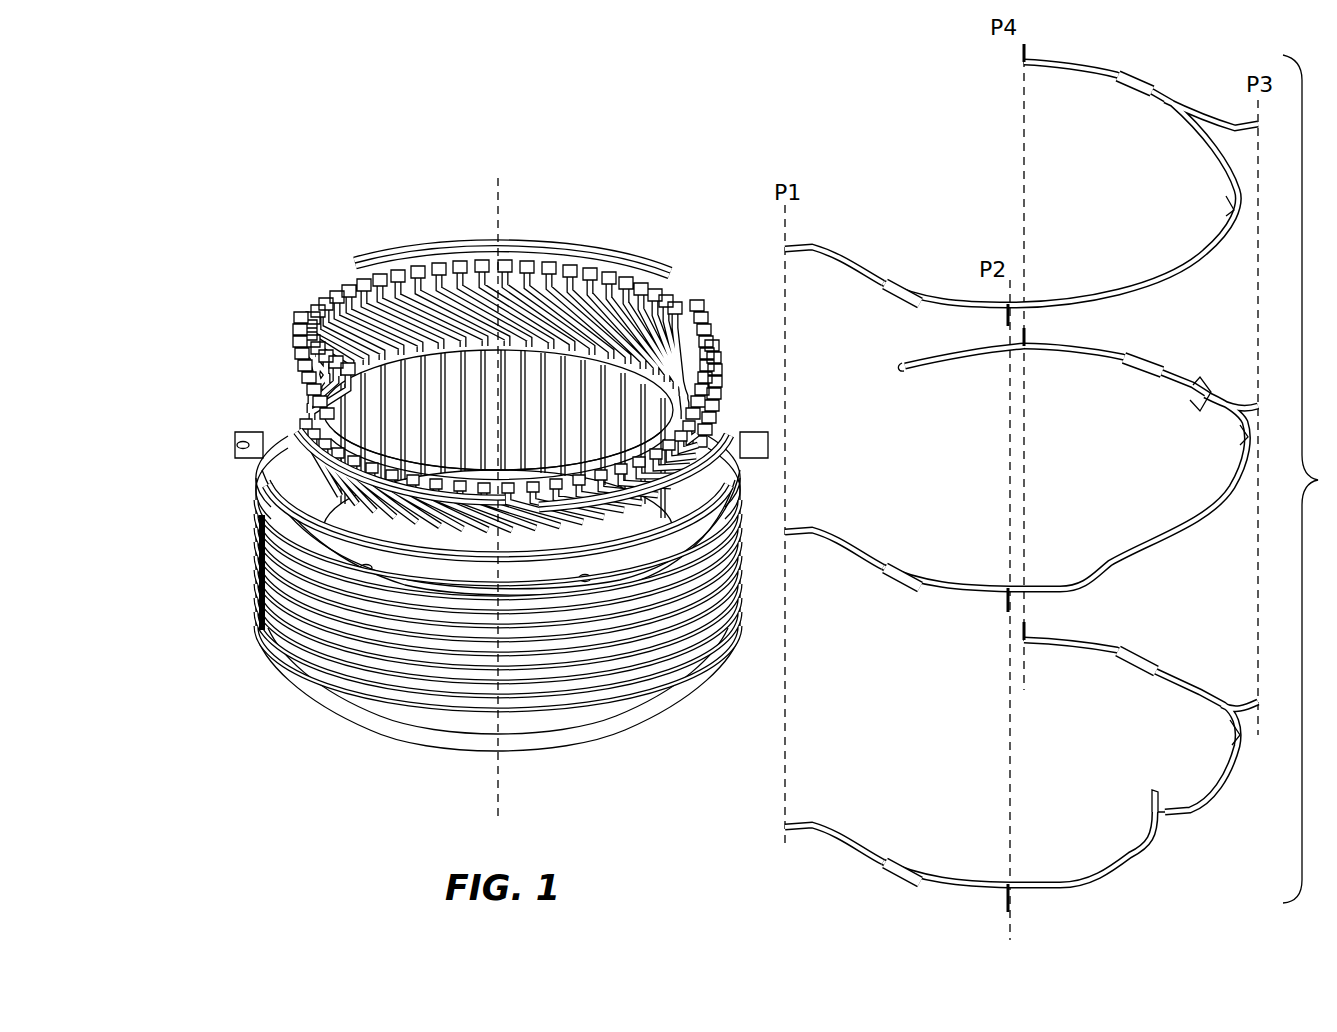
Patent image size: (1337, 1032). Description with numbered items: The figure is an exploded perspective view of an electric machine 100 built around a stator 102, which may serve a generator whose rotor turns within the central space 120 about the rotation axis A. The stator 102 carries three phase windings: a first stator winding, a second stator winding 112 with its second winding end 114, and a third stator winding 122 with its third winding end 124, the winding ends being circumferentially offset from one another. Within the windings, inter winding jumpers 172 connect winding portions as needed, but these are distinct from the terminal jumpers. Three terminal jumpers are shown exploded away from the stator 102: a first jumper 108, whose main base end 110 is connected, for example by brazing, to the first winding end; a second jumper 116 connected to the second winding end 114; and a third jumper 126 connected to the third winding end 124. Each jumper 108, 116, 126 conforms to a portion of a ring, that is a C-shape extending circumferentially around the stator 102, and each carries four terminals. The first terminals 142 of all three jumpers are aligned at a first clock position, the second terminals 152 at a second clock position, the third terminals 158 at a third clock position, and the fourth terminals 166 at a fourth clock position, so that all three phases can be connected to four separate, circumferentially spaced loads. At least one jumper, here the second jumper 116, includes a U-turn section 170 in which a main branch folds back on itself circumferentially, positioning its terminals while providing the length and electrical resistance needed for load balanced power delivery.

The electric machine 100 is at (292, 118).
The stator 102 is at (737, 530).
The first jumper 108 is at (1055, 300).
The main base end 110 is at (662, 385).
The second stator winding 112 is at (662, 300).
The second winding end 114 is at (507, 353).
The second jumper 116 is at (1110, 566).
The space 120 is at (452, 419).
The third stator winding 122 is at (1190, 812).
The third winding end 124 is at (1158, 801).
The third jumper 126 is at (1080, 880).
The first terminal 142 is at (798, 262).
The second terminal 152 is at (1004, 322).
The third terminal 158 is at (1235, 132).
The fourth terminal 166 is at (1035, 52).
The U-turn section 170 is at (903, 372).
The inter winding jumpers 172 is at (345, 440).